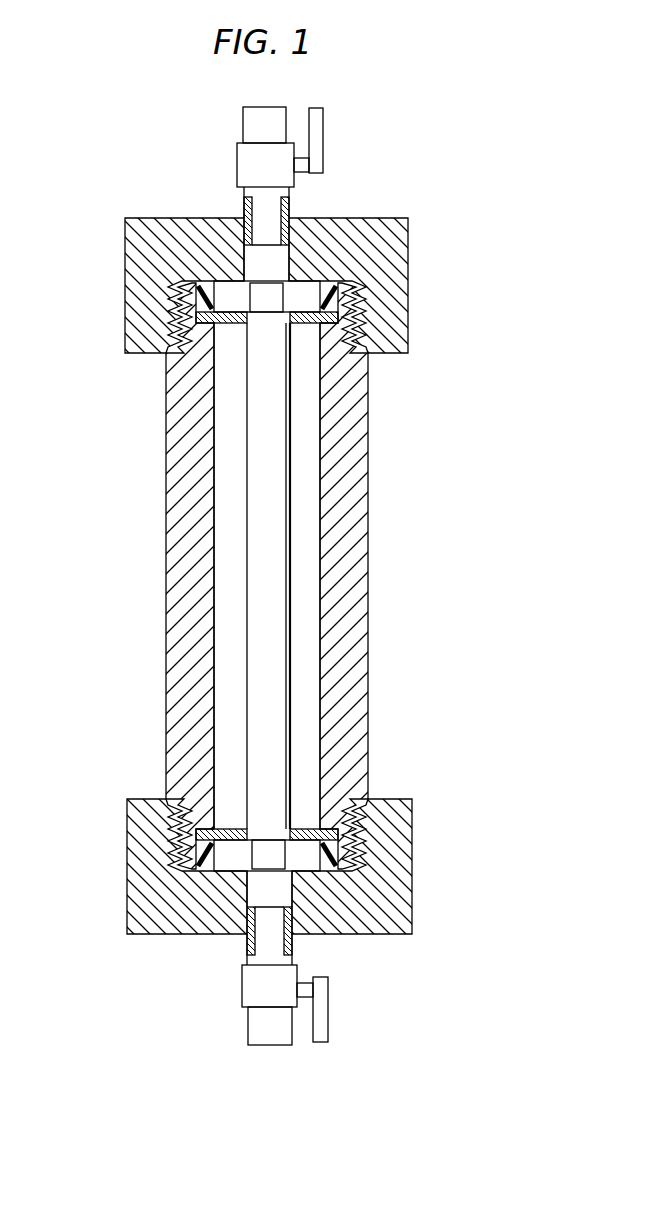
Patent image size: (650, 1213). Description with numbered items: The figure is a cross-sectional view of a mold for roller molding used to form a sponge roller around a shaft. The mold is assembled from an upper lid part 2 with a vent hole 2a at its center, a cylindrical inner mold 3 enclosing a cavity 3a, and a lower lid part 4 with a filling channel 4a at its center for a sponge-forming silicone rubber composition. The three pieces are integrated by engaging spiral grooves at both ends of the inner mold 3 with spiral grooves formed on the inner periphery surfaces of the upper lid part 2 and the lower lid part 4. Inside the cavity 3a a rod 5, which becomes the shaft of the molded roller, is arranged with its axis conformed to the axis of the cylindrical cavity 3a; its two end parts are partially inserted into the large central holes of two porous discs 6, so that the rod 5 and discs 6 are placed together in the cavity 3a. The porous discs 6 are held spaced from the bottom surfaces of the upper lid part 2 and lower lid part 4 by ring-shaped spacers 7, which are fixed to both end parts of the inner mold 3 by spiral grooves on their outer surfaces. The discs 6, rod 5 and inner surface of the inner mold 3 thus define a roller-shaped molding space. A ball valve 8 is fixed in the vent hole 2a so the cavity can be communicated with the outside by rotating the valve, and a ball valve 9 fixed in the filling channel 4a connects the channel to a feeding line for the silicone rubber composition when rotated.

The upper lid part 2 is at (125, 280).
The vent hole 2a is at (262, 263).
The inner mold 3 is at (166, 528).
The cavity 3a is at (307, 707).
The lower lid part 4 is at (127, 860).
The filling channel 4a is at (262, 885).
The rod 5 is at (276, 607).
The porous disc 6 is at (312, 322).
The spacer 7 is at (318, 298).
The ball valve 8 is at (283, 193).
The ball valve 9 is at (323, 1012).